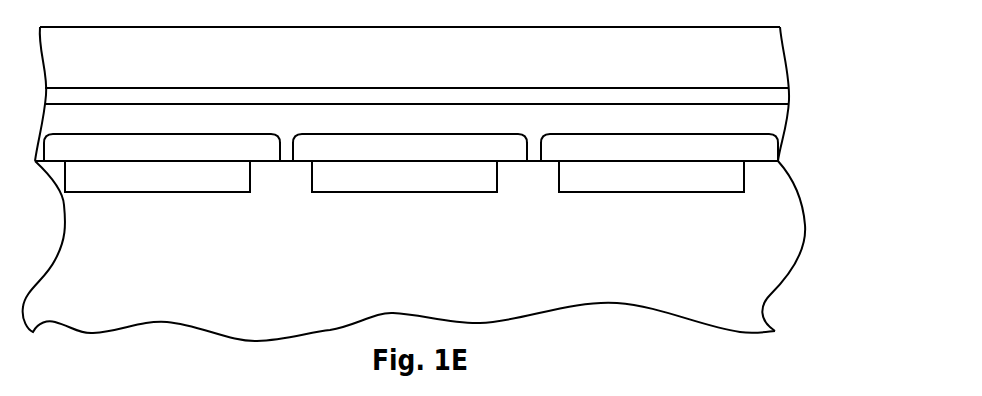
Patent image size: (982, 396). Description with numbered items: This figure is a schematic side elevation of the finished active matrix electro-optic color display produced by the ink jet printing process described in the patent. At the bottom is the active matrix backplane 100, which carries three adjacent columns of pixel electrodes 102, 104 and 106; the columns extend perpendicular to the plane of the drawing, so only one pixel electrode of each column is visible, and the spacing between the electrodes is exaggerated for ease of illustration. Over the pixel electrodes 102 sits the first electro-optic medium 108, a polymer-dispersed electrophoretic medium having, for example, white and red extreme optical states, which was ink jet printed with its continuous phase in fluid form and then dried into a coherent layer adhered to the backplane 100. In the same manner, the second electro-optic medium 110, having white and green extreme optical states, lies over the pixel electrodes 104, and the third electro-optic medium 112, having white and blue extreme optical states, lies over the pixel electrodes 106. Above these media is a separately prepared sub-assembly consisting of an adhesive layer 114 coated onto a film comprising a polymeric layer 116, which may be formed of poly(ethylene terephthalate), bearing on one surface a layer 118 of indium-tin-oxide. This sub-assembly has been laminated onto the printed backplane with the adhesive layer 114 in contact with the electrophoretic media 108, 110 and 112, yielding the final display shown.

The active matrix backplane 100 is at (432, 268).
The pixel electrodes 102 is at (179, 187).
The pixel electrodes 104 is at (424, 187).
The pixel electrodes 106 is at (673, 187).
The first electro-optic medium 108 is at (174, 157).
The second electro-optic medium 110 is at (424, 157).
The third electro-optic medium 112 is at (671, 157).
The adhesive layer 114 is at (759, 116).
The polymeric layer 116 is at (421, 64).
The layer of indium-tin-oxide 118 is at (759, 96).